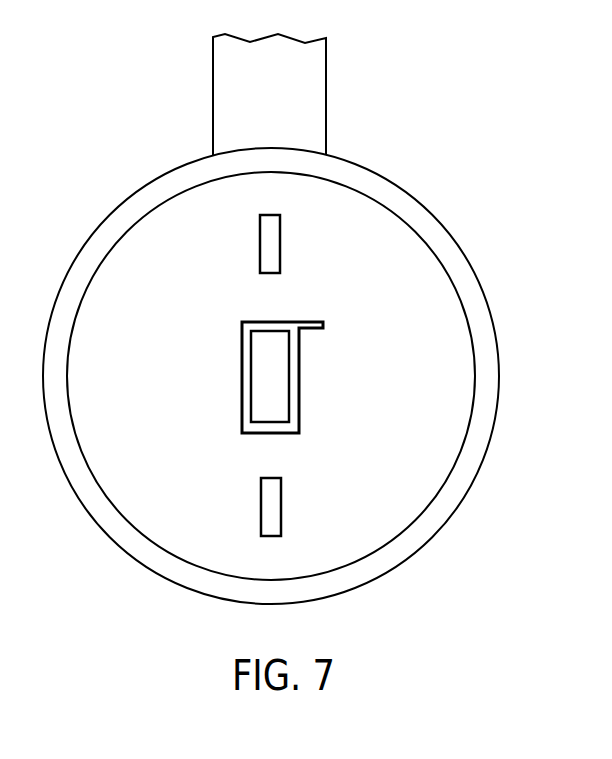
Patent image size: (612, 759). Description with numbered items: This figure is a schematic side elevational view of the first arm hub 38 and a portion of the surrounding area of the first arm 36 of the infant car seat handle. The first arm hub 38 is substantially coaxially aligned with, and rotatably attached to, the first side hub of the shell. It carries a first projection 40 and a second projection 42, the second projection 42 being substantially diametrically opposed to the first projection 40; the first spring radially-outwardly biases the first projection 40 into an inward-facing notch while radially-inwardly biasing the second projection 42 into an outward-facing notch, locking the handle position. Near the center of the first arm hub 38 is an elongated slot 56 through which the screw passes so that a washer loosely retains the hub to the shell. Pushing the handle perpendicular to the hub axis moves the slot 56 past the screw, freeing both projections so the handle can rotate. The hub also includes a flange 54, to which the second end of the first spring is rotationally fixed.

The first arm 36 is at (326, 84).
The first arm hub 38 is at (440, 216).
The first projection 40 is at (260, 236).
The second projection 42 is at (282, 512).
The flange 54 is at (309, 322).
The elongated slot 56 is at (265, 369).